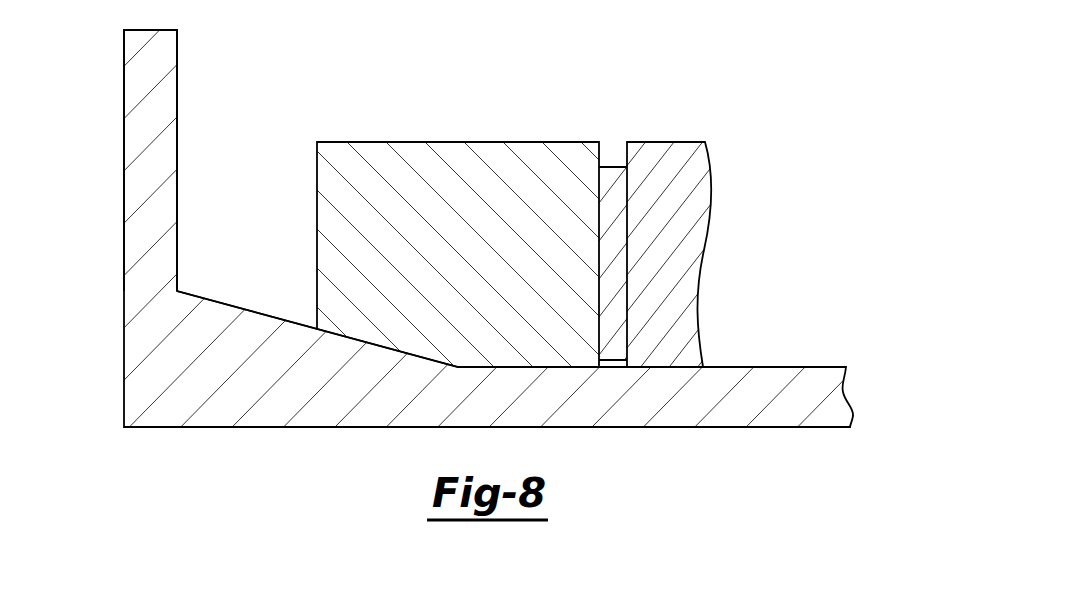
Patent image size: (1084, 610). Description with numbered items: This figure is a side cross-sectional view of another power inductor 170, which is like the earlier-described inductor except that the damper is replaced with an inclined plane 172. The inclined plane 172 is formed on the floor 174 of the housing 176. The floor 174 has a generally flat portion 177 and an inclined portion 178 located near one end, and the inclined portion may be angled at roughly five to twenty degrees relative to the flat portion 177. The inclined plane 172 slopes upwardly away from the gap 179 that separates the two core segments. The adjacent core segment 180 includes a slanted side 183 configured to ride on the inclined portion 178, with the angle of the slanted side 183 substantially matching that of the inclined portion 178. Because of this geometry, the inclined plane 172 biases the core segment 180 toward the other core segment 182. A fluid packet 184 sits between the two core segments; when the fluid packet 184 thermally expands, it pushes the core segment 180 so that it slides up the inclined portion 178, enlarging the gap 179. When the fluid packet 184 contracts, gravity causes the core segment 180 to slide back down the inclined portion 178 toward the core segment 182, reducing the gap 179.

The power inductor 170 is at (735, 75).
The inclined plane 172 is at (296, 128).
The floor 174 is at (823, 367).
The housing 176 is at (140, 140).
The flat portion 177 is at (777, 367).
The inclined portion 178 is at (228, 302).
The gap 179 is at (616, 127).
The core segment 180 is at (406, 180).
The core segment 182 is at (683, 175).
The slanted side 183 is at (353, 337).
The fluid packet 184 is at (617, 217).